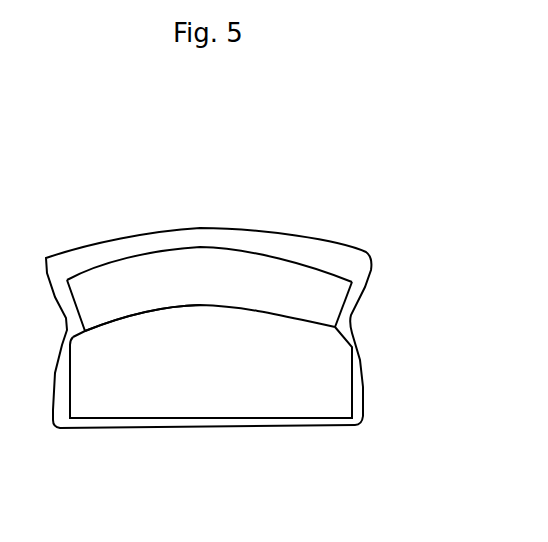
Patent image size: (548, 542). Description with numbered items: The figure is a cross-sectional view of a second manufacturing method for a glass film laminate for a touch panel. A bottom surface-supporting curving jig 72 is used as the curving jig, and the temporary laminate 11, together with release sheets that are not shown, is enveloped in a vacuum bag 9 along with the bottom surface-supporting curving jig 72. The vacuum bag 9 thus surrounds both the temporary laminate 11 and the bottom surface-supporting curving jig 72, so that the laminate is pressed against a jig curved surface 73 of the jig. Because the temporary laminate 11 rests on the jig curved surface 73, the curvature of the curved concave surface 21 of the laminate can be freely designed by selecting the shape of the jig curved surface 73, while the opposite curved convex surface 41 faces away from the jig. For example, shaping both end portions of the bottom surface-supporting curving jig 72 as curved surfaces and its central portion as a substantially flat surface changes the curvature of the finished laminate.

The vacuum bag 9 is at (350, 243).
The temporary laminate 11 is at (204, 247).
The curved convex surface 41 is at (123, 257).
The jig curved surface 73 is at (240, 305).
The bottom surface-supporting curving jig 72 is at (300, 382).
The curved concave surface 21 is at (178, 310).